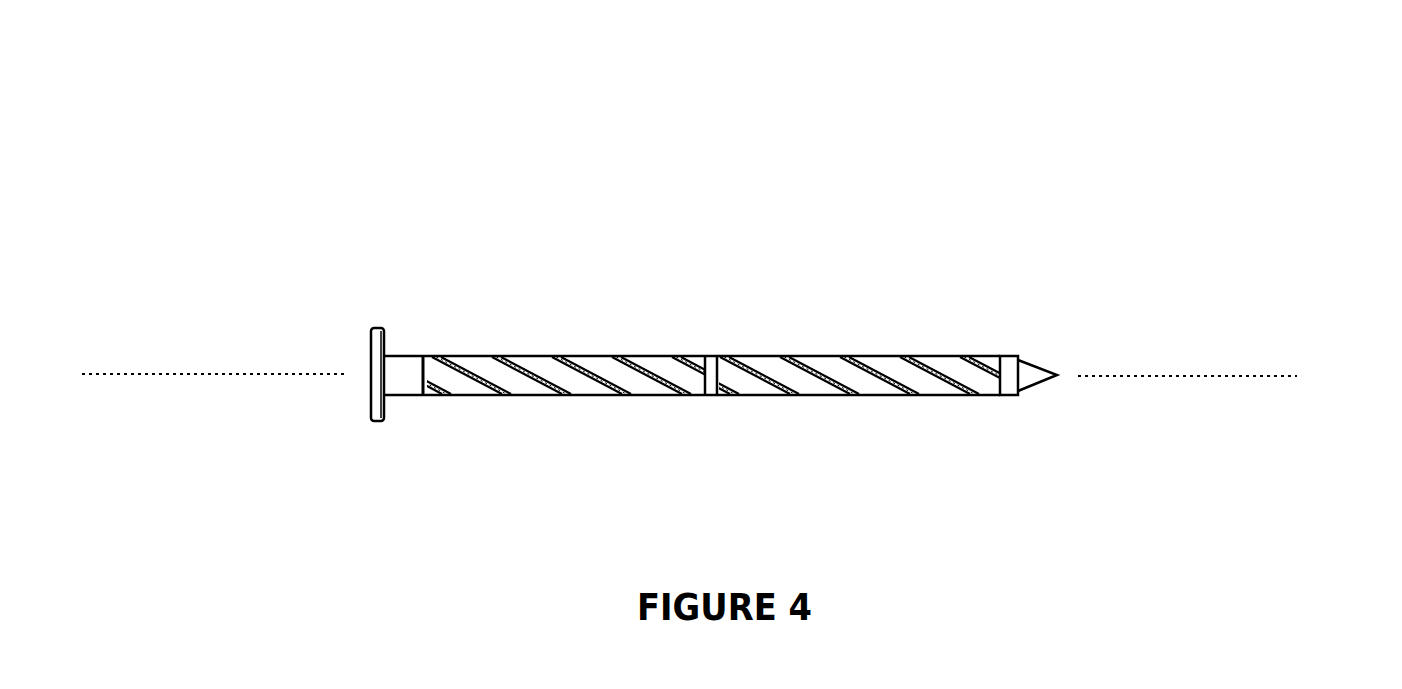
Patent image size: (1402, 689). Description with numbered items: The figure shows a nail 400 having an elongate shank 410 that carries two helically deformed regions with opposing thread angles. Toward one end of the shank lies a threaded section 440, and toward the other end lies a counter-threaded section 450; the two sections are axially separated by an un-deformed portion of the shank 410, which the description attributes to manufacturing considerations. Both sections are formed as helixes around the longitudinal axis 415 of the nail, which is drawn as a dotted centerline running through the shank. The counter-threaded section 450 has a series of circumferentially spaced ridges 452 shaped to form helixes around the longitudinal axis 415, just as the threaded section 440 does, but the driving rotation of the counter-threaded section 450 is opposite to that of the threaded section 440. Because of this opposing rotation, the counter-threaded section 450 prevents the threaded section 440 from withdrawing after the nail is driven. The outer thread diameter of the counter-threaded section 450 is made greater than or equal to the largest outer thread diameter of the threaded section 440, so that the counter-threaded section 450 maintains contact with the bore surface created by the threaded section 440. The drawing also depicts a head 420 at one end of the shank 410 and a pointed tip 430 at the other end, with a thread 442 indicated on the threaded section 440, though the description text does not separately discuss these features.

The nail 400 is at (258, 205).
The elongate shank 410 is at (727, 260).
The longitudinal axis 415 is at (1265, 377).
The head 420 is at (368, 407).
The tip 430 is at (1033, 388).
The threaded section 440 is at (880, 383).
The thread 442 is at (935, 358).
The counter-threaded section 450 is at (561, 436).
The circumferentially spaced ridges 452 is at (430, 350).